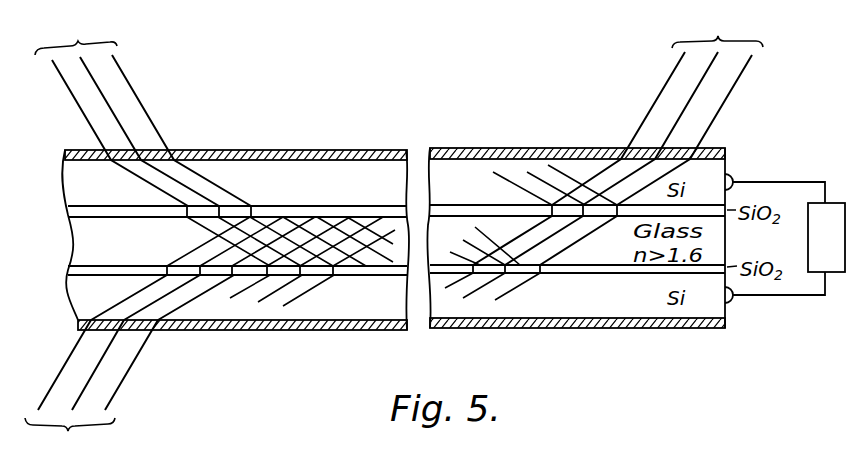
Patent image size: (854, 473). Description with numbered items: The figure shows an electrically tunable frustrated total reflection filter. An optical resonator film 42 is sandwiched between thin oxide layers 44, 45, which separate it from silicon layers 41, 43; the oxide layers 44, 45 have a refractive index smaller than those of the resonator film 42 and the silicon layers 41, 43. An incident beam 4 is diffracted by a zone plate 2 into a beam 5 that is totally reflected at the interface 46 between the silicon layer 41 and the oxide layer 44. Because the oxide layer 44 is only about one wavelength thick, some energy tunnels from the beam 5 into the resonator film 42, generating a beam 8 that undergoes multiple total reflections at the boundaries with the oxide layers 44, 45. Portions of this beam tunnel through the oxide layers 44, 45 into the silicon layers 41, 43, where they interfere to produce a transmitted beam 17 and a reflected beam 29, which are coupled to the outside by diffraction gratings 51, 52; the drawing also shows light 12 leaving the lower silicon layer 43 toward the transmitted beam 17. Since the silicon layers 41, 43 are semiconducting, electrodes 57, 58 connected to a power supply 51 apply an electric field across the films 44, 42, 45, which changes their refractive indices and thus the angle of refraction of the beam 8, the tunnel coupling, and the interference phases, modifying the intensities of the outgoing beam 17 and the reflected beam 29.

The zone plate 2 is at (717, 148).
The incident beam 4 is at (657, 107).
The diffracted beam 5 is at (627, 197).
The resonator beam 8 is at (572, 244).
The light beams 12 is at (185, 303).
The transmitted beam 17 is at (91, 390).
The reflected beam 29 is at (76, 37).
The silicon layer 41 is at (73, 183).
The optical resonator film 42 is at (75, 240).
The silicon layer 43 is at (73, 297).
The thin oxide layer 44 is at (70, 214).
The thin oxide layer 45 is at (70, 270).
The interface 46 is at (300, 205).
The diffraction grating / power supply 51 is at (78, 325).
The diffraction grating 52 is at (80, 150).
The electrode 57 is at (738, 177).
The electrode 58 is at (738, 303).